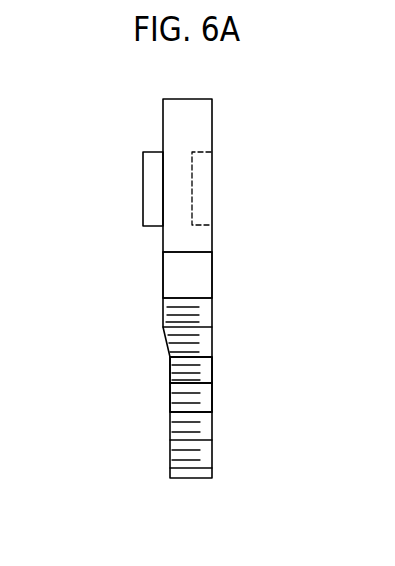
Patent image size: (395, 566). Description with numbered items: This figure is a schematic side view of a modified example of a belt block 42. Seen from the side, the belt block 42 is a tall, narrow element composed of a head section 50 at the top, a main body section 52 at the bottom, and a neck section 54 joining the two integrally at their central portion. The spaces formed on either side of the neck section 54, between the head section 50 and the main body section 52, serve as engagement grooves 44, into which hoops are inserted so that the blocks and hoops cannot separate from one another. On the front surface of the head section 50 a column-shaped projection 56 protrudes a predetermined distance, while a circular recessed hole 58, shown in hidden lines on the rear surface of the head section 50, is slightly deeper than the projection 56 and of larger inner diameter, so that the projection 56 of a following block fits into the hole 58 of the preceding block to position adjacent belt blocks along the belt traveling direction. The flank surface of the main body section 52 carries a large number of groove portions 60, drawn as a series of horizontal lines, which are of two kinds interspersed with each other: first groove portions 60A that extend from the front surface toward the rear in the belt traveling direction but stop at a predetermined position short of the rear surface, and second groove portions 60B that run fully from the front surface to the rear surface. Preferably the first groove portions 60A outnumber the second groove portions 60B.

The belt block 42 is at (263, 127).
The head section 50 is at (161, 118).
The projection 56 is at (150, 185).
The recessed hole 58 is at (193, 224).
The neck section 54 is at (161, 272).
The engagement grooves 44 is at (203, 270).
The main body section 52 is at (213, 333).
The groove portions 60 is at (73, 347).
The first groove portions 60A is at (170, 371).
The second groove portions 60B is at (170, 383).